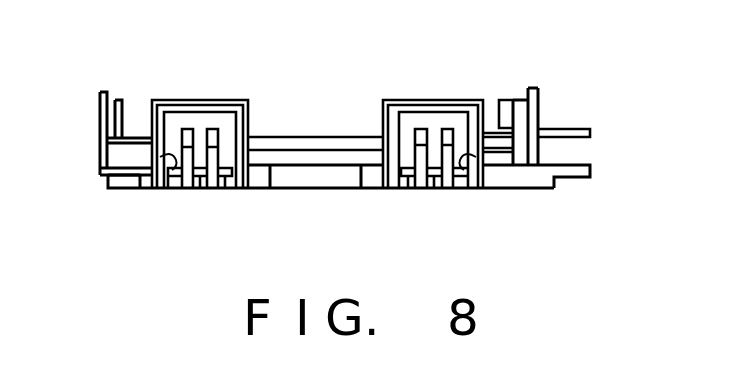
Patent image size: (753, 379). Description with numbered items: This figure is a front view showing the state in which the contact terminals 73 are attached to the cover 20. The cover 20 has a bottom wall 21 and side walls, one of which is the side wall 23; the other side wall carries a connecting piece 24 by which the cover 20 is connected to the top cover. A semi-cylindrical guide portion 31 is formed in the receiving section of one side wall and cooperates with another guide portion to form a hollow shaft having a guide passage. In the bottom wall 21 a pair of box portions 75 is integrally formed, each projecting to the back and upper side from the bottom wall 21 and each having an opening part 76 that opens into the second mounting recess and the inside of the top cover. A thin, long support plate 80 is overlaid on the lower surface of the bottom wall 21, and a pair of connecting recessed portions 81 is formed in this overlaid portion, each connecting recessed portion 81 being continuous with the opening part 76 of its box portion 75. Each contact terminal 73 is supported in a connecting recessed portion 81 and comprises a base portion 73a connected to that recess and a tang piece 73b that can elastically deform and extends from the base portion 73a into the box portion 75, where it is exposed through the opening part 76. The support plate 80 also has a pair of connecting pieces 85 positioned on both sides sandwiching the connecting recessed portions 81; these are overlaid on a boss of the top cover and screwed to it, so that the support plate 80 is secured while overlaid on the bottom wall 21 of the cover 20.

The cover 20 is at (145, 130).
The bottom wall 21 is at (306, 135).
The side wall 23 is at (118, 118).
The connecting piece 24 is at (580, 178).
The guide portion 31 is at (506, 112).
The contact terminal 73 is at (218, 176).
The base portion 73a is at (200, 188).
The tang piece 73b is at (210, 135).
The box portion 75 is at (226, 100).
The opening part 76 is at (207, 120).
The support plate 80 is at (313, 178).
The connecting recessed portion 81 is at (160, 157).
The connecting piece 85 is at (586, 128).